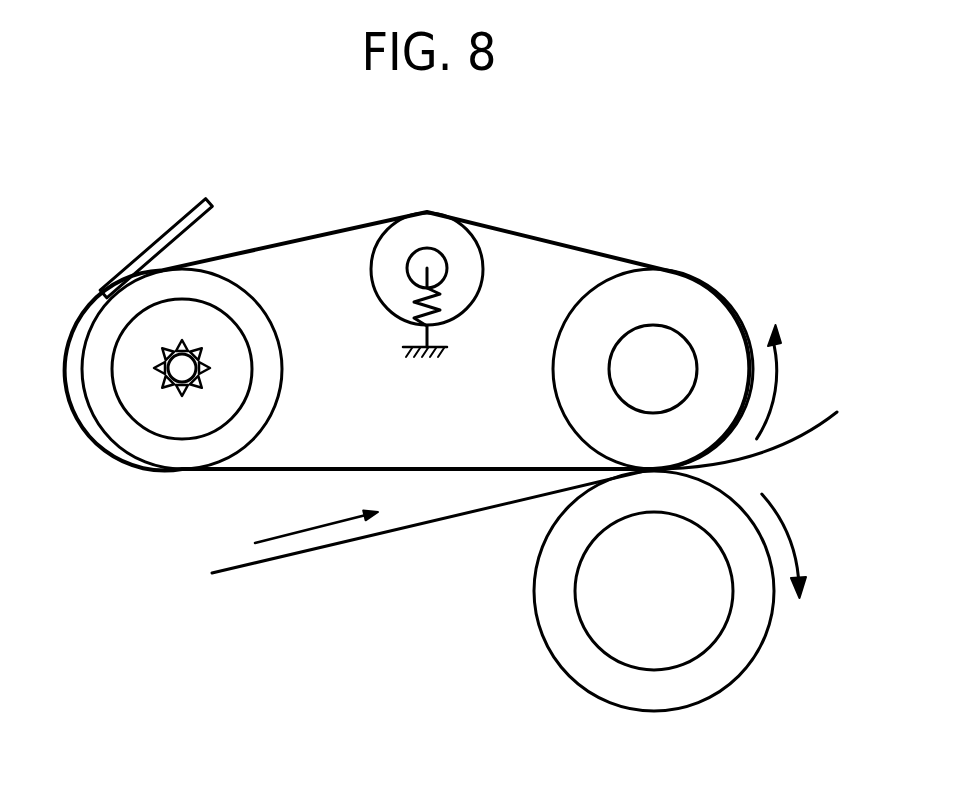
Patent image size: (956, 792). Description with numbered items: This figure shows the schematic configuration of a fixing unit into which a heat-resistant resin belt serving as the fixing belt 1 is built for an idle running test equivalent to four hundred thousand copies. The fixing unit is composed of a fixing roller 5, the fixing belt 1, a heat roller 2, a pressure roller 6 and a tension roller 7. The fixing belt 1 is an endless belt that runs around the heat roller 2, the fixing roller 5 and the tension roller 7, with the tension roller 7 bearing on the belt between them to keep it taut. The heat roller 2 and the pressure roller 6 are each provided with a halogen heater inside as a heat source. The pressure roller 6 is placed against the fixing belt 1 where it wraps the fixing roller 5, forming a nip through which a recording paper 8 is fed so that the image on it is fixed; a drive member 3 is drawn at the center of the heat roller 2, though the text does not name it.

The fixing belt 1 is at (565, 243).
The heat roller 2 is at (90, 353).
The drive gear (drive source) 3 is at (164, 382).
The fixing roller 5 is at (709, 299).
The pressure roller 6 is at (541, 616).
The tension roller 7 is at (427, 227).
The recording paper 8 is at (258, 568).